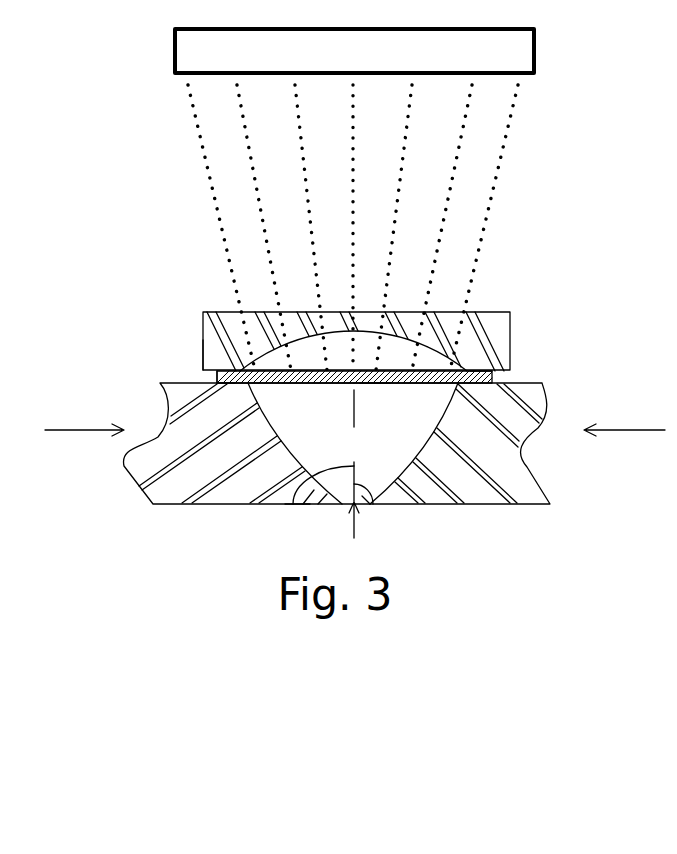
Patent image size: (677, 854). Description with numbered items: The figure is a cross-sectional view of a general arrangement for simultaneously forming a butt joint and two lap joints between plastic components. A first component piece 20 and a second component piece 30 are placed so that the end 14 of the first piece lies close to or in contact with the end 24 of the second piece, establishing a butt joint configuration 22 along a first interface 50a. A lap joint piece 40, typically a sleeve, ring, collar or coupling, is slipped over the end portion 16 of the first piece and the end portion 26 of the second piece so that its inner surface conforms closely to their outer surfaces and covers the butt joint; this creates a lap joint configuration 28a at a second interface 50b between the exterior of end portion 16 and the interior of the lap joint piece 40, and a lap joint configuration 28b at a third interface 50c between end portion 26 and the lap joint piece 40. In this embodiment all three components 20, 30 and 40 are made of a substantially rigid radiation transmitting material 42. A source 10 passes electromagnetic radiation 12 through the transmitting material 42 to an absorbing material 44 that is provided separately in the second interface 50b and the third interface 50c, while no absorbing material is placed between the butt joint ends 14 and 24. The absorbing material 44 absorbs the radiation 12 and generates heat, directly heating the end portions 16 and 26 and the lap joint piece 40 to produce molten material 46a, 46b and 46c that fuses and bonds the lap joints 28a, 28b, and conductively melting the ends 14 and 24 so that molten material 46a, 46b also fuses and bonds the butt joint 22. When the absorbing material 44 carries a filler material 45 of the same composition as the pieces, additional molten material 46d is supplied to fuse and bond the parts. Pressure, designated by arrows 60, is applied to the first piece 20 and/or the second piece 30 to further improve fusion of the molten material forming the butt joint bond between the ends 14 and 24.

The source 10 is at (368, 65).
The electromagnetic radiation 12 is at (355, 160).
The end of the first component piece 14 is at (338, 505).
The end portion of the first component piece 16 is at (343, 455).
The first component piece 20 is at (181, 398).
The butt joint configuration 22 is at (353, 514).
The end of the second component piece 24 is at (378, 505).
The end portion of the second component piece 26 is at (388, 455).
The lap joint configuration 28a is at (288, 358).
The lap joint configuration 28b is at (434, 370).
The second component piece 30 is at (540, 408).
The lap joint piece 40 is at (208, 336).
The radiation transmitting material 42 is at (500, 328).
The absorbing material 44 is at (493, 379).
The filler material 45 is at (210, 355).
The molten material 46a is at (315, 433).
The molten material 46b is at (437, 416).
The molten material 46c is at (377, 365).
The additional molten material 46d is at (347, 385).
The first interface 50a is at (297, 505).
The second interface 50b is at (218, 380).
The third interface 50c is at (482, 358).
The arrows designating pressure 60 is at (82, 421).